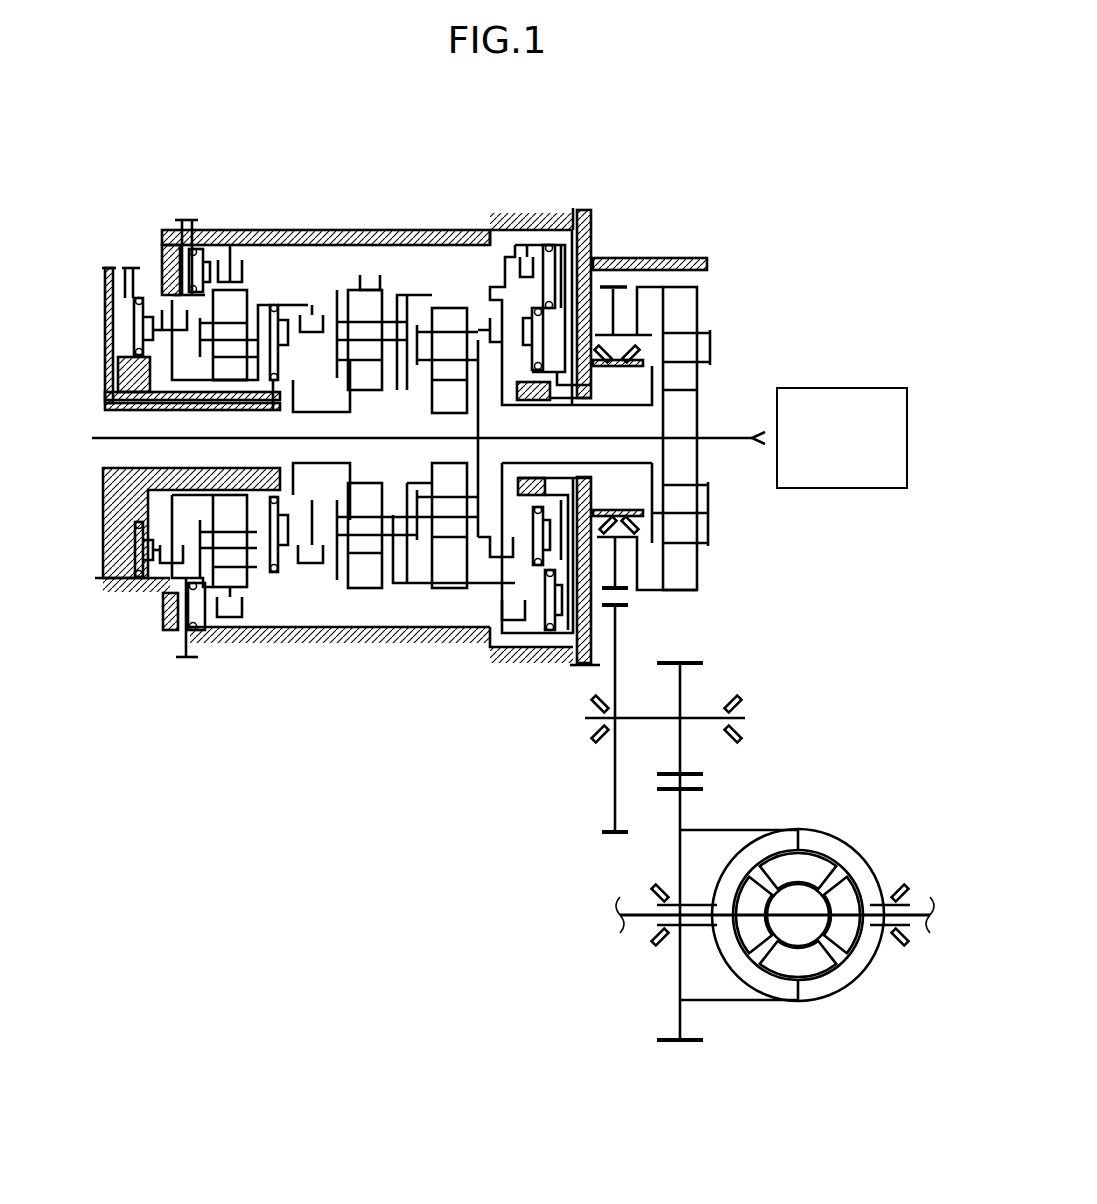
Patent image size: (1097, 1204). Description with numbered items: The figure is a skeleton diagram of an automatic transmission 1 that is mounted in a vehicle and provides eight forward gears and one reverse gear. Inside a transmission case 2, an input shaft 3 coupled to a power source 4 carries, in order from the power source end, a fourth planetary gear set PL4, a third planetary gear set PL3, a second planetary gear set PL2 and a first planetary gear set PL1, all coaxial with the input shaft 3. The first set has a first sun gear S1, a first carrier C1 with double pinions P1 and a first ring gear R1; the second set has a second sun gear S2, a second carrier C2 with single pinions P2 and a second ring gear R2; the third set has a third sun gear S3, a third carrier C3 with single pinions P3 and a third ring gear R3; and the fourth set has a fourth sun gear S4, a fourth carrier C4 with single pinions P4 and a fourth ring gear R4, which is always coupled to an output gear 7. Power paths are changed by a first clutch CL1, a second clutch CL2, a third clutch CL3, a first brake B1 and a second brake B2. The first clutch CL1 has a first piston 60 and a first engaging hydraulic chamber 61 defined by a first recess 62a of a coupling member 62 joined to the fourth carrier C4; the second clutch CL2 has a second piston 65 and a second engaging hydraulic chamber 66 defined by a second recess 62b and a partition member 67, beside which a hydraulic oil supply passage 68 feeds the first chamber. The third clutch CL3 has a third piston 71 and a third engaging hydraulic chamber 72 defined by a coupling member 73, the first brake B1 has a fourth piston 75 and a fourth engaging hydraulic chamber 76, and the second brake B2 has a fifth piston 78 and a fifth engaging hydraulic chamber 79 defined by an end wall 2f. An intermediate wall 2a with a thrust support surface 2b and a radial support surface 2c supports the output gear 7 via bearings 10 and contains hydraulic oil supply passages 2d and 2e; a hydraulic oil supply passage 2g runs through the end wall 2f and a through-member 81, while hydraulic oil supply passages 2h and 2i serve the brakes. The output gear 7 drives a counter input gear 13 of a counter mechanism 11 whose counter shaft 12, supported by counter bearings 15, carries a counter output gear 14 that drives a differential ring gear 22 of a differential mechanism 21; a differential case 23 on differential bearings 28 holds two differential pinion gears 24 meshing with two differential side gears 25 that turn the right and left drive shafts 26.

The automatic transmission 1 is at (656, 148).
The transmission case 2 is at (680, 250).
The intermediate wall 2a is at (600, 262).
The thrust support surface 2b is at (643, 300).
The radial support surface 2c is at (640, 350).
The hydraulic oil supply passage 2d is at (575, 215).
The hydraulic oil supply passage 2e is at (600, 626).
The end wall 2f is at (134, 540).
The hydraulic oil supply passage 2g is at (140, 410).
The hydraulic oil supply passage 2h is at (194, 222).
The hydraulic oil supply passage 2i is at (128, 265).
The input shaft 3 is at (110, 440).
The power source 4 is at (850, 388).
The output gear 7 is at (620, 282).
The bearings 10 is at (640, 345).
The counter mechanism 11 is at (583, 801).
The counter shaft 12 is at (640, 716).
The counter input gear 13 is at (605, 838).
The counter output gear 14 is at (690, 662).
The counter bearings 15 is at (726, 696).
The differential mechanism 21 is at (805, 802).
The differential ring gear 22 is at (668, 792).
The differential case 23 is at (735, 829).
The differential pinion gears 24 is at (816, 852).
The differential side gears 25 is at (860, 880).
The drive shafts 26 is at (637, 922).
The differential bearings 28 is at (662, 945).
The first piston 60 is at (537, 257).
The first engaging hydraulic chamber 61 is at (553, 262).
The coupling member 62 is at (588, 260).
The first recess 62a is at (525, 243).
The second recess 62b is at (504, 370).
The second piston 65 is at (522, 348).
The second engaging hydraulic chamber 66 is at (545, 392).
The partition member 67 is at (585, 366).
The hydraulic oil supply passage 68 is at (592, 388).
The third piston 71 is at (289, 338).
The third engaging hydraulic chamber 72 is at (285, 300).
The coupling member 73 is at (322, 414).
The fourth piston 75 is at (205, 256).
The fourth engaging hydraulic chamber 76 is at (172, 258).
The fifth piston 78 is at (134, 322).
The fifth engaging hydraulic chamber 79 is at (134, 346).
The through-member 81 is at (205, 482).
The first brake B1 is at (232, 262).
The second brake B2 is at (141, 300).
The first carrier C1 is at (252, 355).
The second carrier C2 is at (400, 360).
The third carrier C3 is at (476, 335).
The fourth carrier C4 is at (654, 405).
The first clutch CL1 is at (505, 252).
The second clutch CL2 is at (489, 325).
The third clutch CL3 is at (336, 290).
The double pinions P1 is at (208, 350).
The single pinions P2 is at (390, 300).
The single pinions P3 is at (436, 380).
The single pinions P4 is at (699, 385).
The first planetary gear set PL1 is at (252, 283).
The second planetary gear set PL2 is at (352, 283).
The third planetary gear set PL3 is at (433, 300).
The fourth planetary gear set PL4 is at (713, 298).
The first ring gear R1 is at (244, 286).
The second ring gear R2 is at (370, 290).
The third ring gear R3 is at (428, 300).
The fourth ring gear R4 is at (699, 314).
The first sun gear S1 is at (215, 372).
The second sun gear S2 is at (348, 380).
The third sun gear S3 is at (440, 408).
The fourth sun gear S4 is at (699, 426).